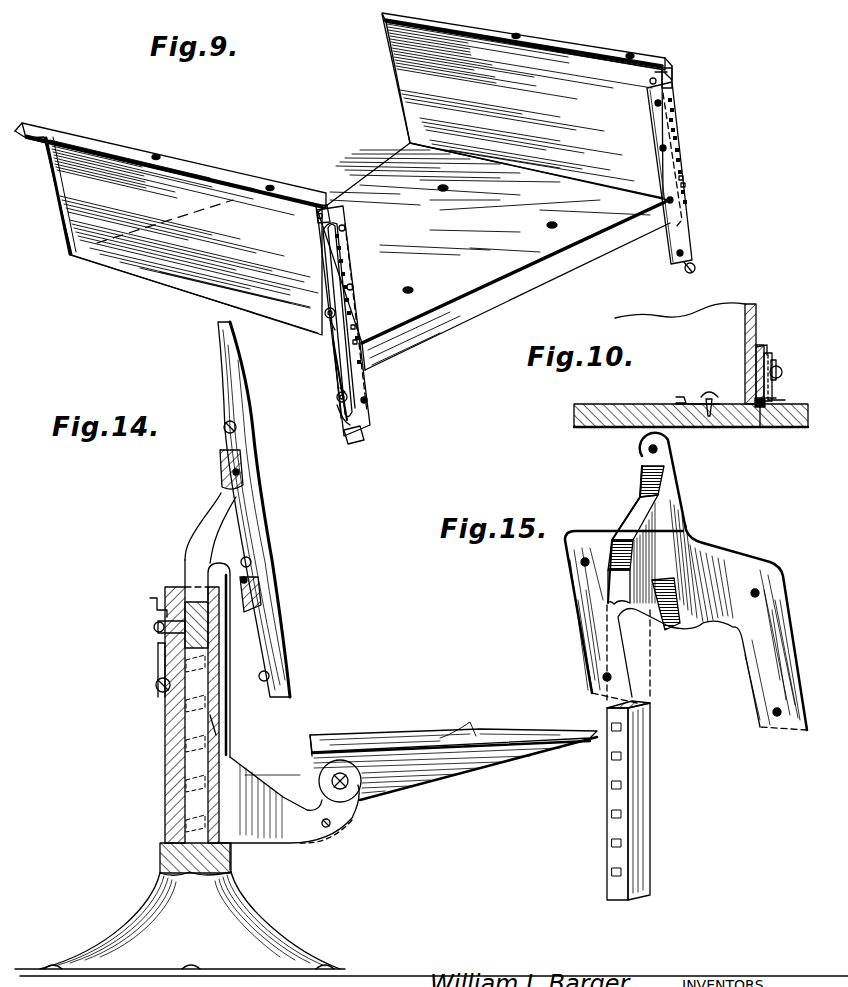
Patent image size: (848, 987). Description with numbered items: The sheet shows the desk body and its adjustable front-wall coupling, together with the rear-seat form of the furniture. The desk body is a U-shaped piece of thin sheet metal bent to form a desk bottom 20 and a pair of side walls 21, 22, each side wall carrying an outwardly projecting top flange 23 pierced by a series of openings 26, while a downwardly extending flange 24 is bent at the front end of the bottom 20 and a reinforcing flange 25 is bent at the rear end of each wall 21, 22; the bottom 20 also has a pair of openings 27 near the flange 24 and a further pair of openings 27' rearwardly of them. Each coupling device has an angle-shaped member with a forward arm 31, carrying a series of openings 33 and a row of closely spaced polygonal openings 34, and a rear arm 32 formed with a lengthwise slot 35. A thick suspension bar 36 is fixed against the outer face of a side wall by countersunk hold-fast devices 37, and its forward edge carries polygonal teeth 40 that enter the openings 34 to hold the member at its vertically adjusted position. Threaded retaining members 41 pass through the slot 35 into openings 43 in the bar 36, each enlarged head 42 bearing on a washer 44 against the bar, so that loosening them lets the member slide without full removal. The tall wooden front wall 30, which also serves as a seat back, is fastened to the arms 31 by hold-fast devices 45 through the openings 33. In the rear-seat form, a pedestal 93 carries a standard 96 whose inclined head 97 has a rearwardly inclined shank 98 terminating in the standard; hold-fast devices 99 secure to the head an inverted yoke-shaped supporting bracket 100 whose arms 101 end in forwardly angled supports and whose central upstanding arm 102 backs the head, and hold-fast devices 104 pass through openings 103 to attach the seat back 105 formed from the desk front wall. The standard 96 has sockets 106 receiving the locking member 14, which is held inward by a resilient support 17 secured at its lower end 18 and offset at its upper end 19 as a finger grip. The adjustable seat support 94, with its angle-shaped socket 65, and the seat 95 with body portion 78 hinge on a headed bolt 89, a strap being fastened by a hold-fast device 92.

In FIG. 14, the locking member 14 is at (160, 630).
In FIG. 14, the resilient support 17 is at (158, 666).
In FIG. 14, the lower securing point 18 is at (157, 688).
In FIG. 14, the offset finger hold 19 is at (152, 603).
In FIG. 9, the desk bottom 20 is at (344, 178).
In FIG. 10, the desk bottom 20 is at (686, 312).
In FIG. 9, the side wall 21 is at (160, 262).
In FIG. 9, the side wall 22 is at (410, 112).
In FIG. 10, the side wall 22 is at (757, 340).
In FIG. 9, the top flange 23 is at (230, 182).
In FIG. 9, the front flange 24 is at (446, 328).
In FIG. 9, the reinforcing flange 25 is at (66, 214).
In FIG. 9, the openings 26 is at (57, 131).
In FIG. 9, the openings 27 is at (480, 257).
In FIG. 9, the openings 27' is at (272, 221).
In FIG. 10, the front wall 30 is at (622, 400).
In FIG. 9, the forward arm 31 is at (372, 416).
In FIG. 10, the forward arm 31 is at (682, 397).
In FIG. 9, the rear arm 32 is at (340, 420).
In FIG. 10, the rear arm 32 is at (770, 350).
In FIG. 9, the openings 33 is at (346, 228).
In FIG. 9, the polygonal openings 34 is at (341, 249).
In FIG. 10, the polygonal openings 34 is at (775, 418).
In FIG. 9, the lengthwise slot 35 is at (338, 362).
In FIG. 10, the lengthwise slot 35 is at (752, 360).
In FIG. 9, the suspension bar 36 is at (326, 214).
In FIG. 10, the suspension bar 36 is at (762, 344).
In FIG. 9, the hold-fast devices 37 is at (315, 220).
In FIG. 9, the polygonal teeth 40 is at (352, 320).
In FIG. 10, the polygonal teeth 40 is at (760, 428).
In FIG. 10, the retaining member 41 is at (778, 366).
In FIG. 9, the enlarged head 42 is at (325, 313).
In FIG. 10, the enlarged head 42 is at (774, 378).
In FIG. 9, the openings 43 is at (332, 290).
In FIG. 9, the washer 44 is at (330, 330).
In FIG. 10, the washer 44 is at (773, 399).
In FIG. 10, the hold-fast devices 45 is at (708, 395).
In FIG. 14, the angle-shaped socket 65 is at (214, 730).
In FIG. 14, the seat body portion 78 is at (468, 730).
In FIG. 14, the headed bolt 89 is at (350, 790).
In FIG. 14, the hold-fast device 92 is at (330, 827).
In FIG. 14, the pedestal 93 is at (165, 752).
In FIG. 14, the adjustable seat support 94 is at (286, 830).
In FIG. 14, the seat 95 is at (424, 760).
In FIG. 14, the standard 96 is at (196, 562).
In FIG. 15, the standard 96 is at (640, 777).
In FIG. 14, the head 97 is at (222, 522).
In FIG. 15, the head 97 is at (638, 522).
In FIG. 14, the shank 98 is at (203, 530).
In FIG. 15, the shank 98 is at (666, 590).
In FIG. 14, the hold-fast devices 99 is at (238, 472).
In FIG. 15, the supporting bracket 100 is at (735, 560).
In FIG. 15, the bracket arm 101 is at (778, 632).
In FIG. 15, the upstanding arm 102 is at (684, 504).
In FIG. 15, the openings 103 is at (648, 450).
In FIG. 14, the hold-fast devices 104 is at (226, 428).
In FIG. 14, the seat back 105 is at (224, 390).
In FIG. 14, the sockets 106 is at (190, 806).
In FIG. 15, the sockets 106 is at (612, 784).